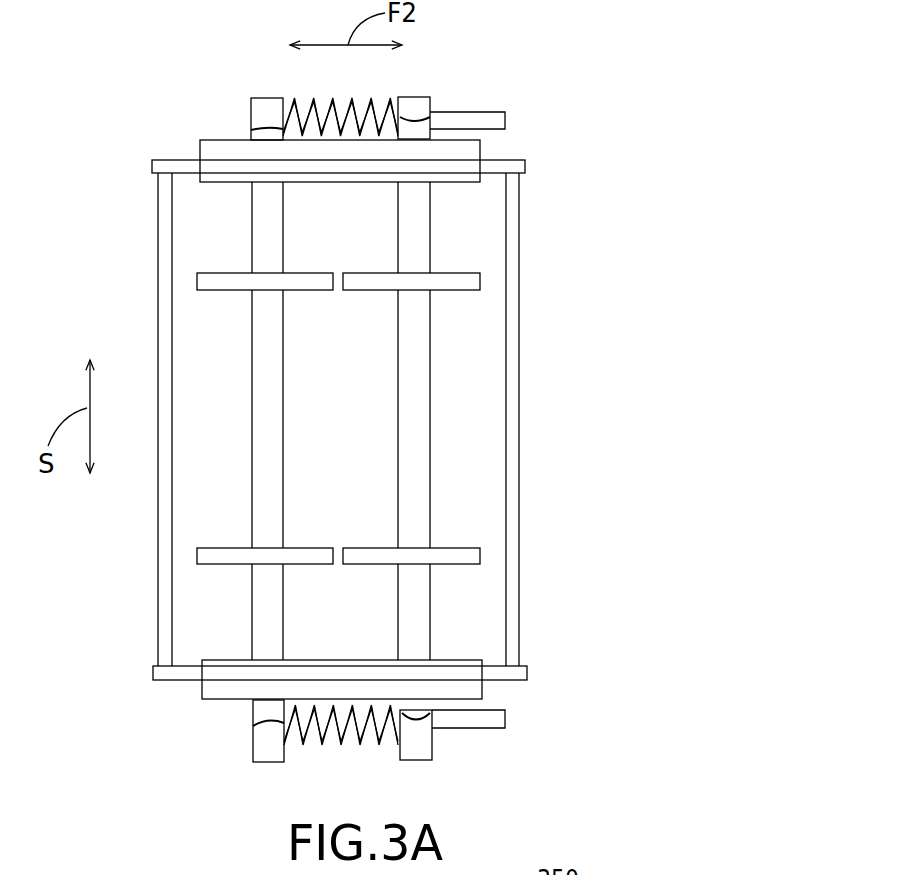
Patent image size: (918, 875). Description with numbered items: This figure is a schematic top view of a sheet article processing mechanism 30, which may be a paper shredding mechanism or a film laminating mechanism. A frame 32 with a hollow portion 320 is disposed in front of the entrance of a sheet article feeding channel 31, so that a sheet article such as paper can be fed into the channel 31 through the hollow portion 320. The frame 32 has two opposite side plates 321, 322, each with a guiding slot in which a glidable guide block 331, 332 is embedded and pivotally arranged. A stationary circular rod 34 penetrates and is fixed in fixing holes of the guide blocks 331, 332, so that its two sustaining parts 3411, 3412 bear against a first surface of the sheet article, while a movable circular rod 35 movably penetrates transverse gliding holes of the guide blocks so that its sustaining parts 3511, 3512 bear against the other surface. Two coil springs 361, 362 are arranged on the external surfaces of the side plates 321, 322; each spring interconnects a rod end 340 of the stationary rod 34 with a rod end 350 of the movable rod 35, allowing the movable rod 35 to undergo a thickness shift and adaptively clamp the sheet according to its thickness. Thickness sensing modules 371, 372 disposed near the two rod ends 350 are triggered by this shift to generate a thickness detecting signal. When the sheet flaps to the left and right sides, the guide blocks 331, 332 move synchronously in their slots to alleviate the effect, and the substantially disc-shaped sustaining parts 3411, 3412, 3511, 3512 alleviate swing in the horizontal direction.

The sheet article processing mechanism 30 is at (654, 62).
The sheet article feeding channel 31 is at (333, 393).
The frame 32 is at (513, 213).
The hollow portion 320 is at (477, 322).
The side plate 321 is at (514, 672).
The side plate 322 is at (498, 167).
The glidable guide block 331 is at (221, 690).
The glidable guide block 332 is at (225, 154).
The stationary circular rod 34 is at (270, 427).
The rod end 340 is at (268, 108).
The sustaining part 3411 is at (298, 282).
The sustaining part 3412 is at (296, 556).
The movable circular rod 35 is at (412, 407).
The rod end 350 is at (412, 104).
The sustaining part 3511 is at (385, 279).
The sustaining part 3512 is at (386, 554).
The coil spring 361 is at (348, 746).
The coil spring 362 is at (348, 96).
The thickness sensing module 371 is at (474, 718).
The thickness sensing module 372 is at (485, 122).